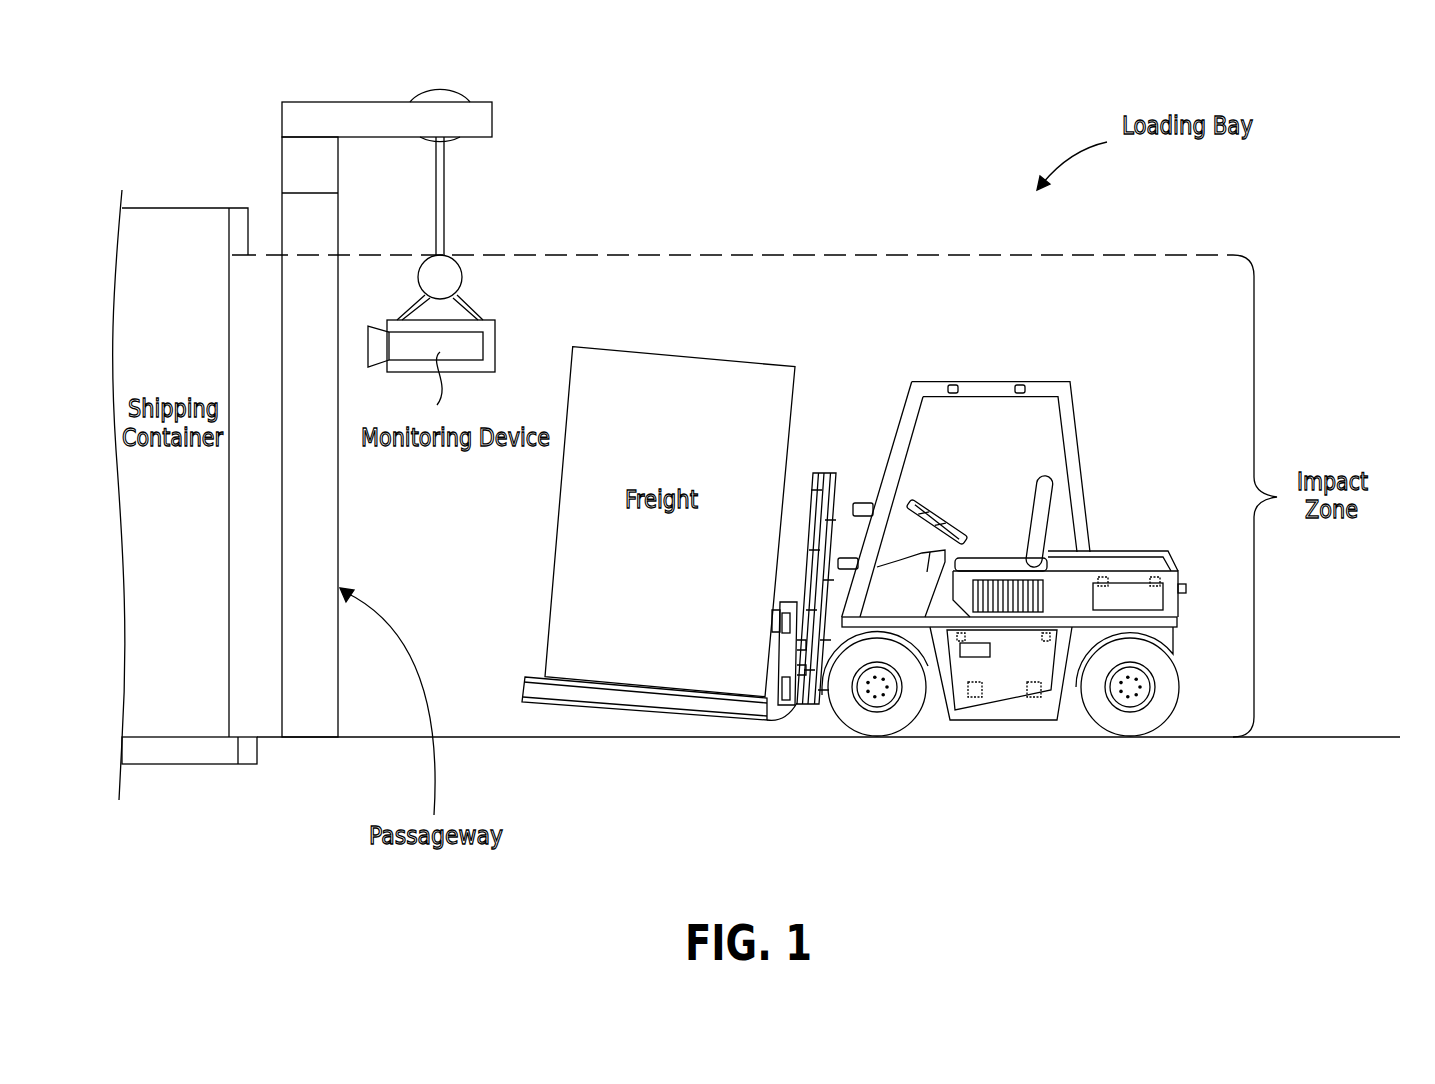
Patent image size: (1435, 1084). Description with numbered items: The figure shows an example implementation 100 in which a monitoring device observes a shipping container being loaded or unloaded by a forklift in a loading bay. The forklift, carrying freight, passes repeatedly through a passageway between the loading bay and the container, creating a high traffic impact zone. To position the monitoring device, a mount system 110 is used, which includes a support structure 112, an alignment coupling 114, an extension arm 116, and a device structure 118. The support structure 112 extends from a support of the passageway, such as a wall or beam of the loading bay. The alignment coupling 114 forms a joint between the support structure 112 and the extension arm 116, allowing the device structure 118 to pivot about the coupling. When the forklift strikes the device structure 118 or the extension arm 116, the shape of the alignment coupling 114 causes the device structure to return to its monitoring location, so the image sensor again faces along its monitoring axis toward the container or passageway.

The example implementation 100 is at (243, 73).
The mount system 110 is at (572, 78).
The support structure 112 is at (383, 98).
The alignment coupling 114 is at (449, 80).
The extension arm 116 is at (445, 187).
The device structure 118 is at (496, 300).